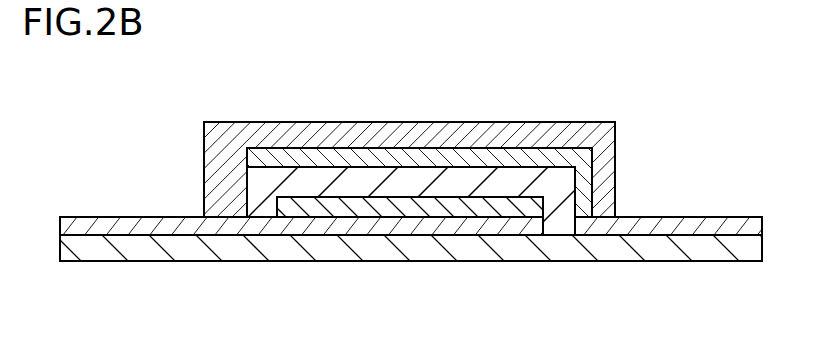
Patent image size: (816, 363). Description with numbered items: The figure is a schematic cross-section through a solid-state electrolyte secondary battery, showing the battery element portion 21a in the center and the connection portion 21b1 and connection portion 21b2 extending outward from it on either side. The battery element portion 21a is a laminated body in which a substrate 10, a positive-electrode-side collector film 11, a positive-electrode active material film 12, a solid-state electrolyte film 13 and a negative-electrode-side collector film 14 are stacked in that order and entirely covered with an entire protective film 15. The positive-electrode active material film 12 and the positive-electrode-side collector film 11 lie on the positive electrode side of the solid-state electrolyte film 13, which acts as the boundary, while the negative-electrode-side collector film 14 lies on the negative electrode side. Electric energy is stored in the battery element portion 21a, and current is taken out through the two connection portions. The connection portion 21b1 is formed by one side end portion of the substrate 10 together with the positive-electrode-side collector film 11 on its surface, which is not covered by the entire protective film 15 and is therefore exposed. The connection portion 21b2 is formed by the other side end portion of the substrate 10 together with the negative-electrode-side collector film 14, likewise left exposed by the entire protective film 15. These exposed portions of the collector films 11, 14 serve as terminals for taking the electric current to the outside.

The substrate 10 is at (277, 247).
The positive-electrode-side collector film 11 is at (337, 227).
The positive-electrode active material film 12 is at (424, 207).
The solid-state electrolyte film 13 is at (485, 172).
The negative-electrode-side collector film 14 is at (548, 163).
The entire protective film 15 is at (598, 137).
The battery element portion 21a is at (386, 112).
The connection portion 21b1 is at (122, 210).
The connection portion 21b2 is at (692, 210).